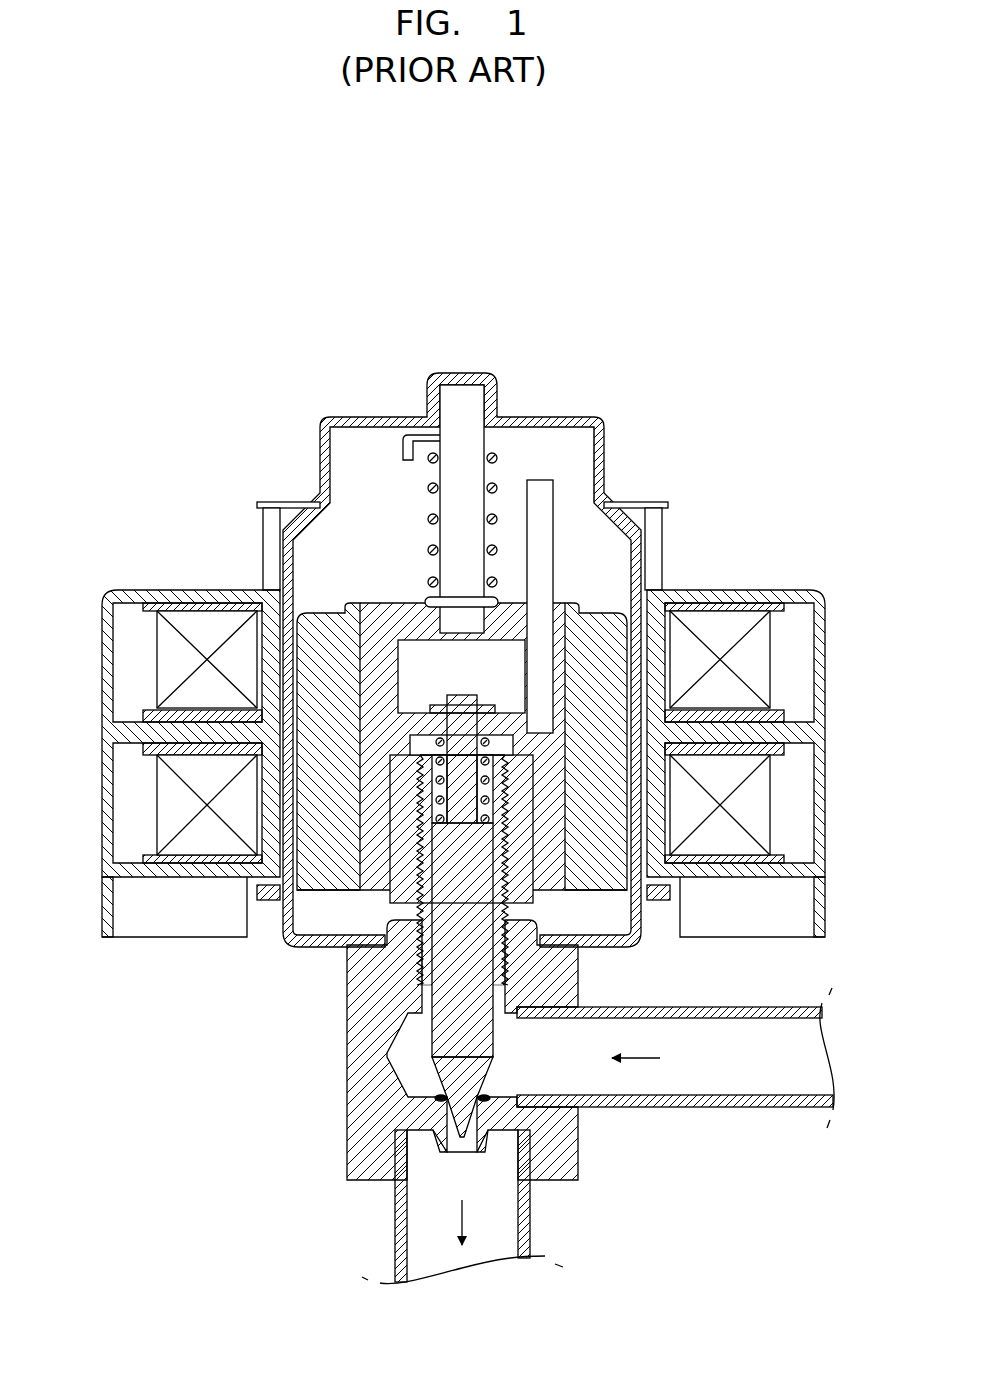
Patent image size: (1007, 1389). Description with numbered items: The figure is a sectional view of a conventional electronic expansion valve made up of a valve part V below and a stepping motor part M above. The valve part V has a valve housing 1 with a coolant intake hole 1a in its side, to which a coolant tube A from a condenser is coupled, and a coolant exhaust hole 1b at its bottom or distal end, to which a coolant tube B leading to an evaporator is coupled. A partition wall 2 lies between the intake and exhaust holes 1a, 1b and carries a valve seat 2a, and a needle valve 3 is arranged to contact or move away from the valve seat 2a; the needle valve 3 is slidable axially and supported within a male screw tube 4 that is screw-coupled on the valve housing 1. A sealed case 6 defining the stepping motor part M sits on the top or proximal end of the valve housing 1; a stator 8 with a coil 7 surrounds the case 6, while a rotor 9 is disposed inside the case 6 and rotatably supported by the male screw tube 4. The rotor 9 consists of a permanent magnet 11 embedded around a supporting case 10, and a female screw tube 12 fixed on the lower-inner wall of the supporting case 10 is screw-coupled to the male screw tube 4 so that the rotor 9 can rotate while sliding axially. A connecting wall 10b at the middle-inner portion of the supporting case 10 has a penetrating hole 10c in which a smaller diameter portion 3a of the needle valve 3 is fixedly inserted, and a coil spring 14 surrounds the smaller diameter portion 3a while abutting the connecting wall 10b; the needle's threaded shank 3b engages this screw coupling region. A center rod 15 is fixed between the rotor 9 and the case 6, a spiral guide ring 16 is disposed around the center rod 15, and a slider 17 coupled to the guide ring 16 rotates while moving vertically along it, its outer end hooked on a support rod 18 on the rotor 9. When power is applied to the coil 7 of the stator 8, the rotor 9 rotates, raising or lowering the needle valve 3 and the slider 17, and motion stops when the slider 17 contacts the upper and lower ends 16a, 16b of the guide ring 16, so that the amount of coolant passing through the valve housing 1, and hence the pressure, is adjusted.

The valve housing 1 is at (373, 998).
The coolant intake hole 1a is at (578, 1115).
The coolant exhaust hole 1b is at (390, 1157).
The partition wall 2 is at (548, 1110).
The valve seat 2a is at (440, 1094).
The needle valve 3 is at (447, 1040).
The smaller diameter portion 3a is at (460, 755).
The threaded portion of needle 3b is at (493, 818).
The male screw tube 4 is at (513, 967).
The sealed case 6 is at (640, 557).
The coil 7 is at (760, 655).
The stator 8 is at (822, 684).
The rotor 9 is at (390, 598).
The supporting case 10 is at (378, 807).
The connecting wall 10b is at (428, 715).
The penetrating hole 10c is at (508, 705).
The permanent magnet 11 is at (318, 647).
The female screw tube 12 is at (410, 862).
The coil spring 14 is at (705, 765).
The center rod 15 is at (452, 422).
The spiral guide ring 16 is at (430, 487).
The upper end of the guide ring 16a is at (405, 447).
The lower end of the guide ring 16b is at (588, 430).
The slider 17 is at (511, 587).
The support rod 18 is at (538, 485).
The stepping motor part M is at (150, 532).
The valve part V is at (238, 1043).
The coolant tube A is at (693, 1100).
The coolant tube B is at (522, 1224).